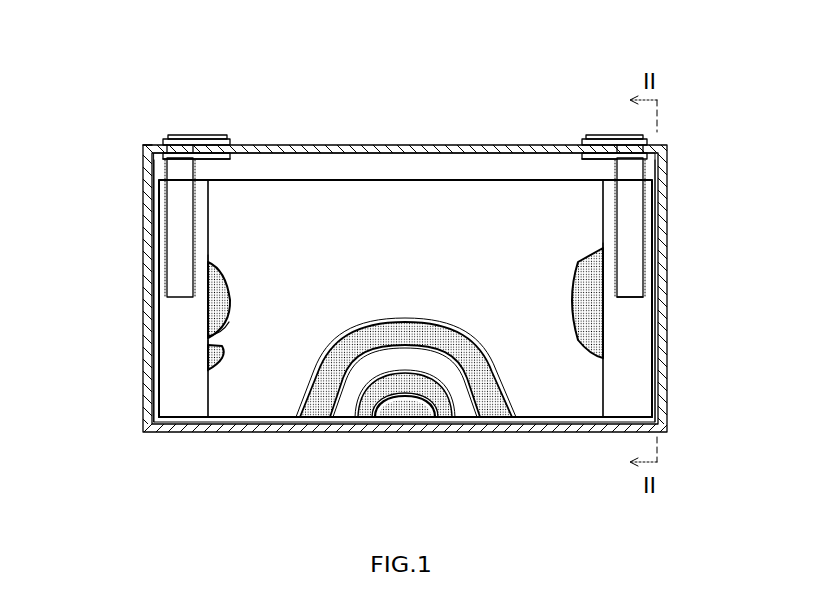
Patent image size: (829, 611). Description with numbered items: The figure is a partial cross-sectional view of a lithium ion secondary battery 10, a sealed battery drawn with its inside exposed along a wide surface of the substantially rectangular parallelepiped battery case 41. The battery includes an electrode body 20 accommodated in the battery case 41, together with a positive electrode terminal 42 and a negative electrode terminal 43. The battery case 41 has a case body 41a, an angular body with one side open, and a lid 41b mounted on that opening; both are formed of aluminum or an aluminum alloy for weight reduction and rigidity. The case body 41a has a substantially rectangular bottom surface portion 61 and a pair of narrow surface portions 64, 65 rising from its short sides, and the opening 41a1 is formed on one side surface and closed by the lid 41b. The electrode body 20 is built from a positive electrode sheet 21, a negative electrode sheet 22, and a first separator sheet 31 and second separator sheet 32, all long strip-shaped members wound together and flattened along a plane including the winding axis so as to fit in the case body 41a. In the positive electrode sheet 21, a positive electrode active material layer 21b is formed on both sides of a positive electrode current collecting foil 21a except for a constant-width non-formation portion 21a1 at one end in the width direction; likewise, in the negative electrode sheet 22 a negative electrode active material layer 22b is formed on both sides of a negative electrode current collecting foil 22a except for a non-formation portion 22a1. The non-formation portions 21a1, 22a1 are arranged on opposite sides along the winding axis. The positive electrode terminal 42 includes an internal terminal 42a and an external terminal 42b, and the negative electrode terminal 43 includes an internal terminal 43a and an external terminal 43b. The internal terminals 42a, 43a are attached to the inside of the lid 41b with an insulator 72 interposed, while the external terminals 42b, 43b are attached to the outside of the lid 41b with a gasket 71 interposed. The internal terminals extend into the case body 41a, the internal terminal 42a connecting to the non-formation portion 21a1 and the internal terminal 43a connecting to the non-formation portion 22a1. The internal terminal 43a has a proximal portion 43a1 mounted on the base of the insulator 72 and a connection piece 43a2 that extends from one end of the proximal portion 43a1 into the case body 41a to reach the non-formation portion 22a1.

The lithium ion secondary battery 10 is at (472, 82).
The electrode body 20 is at (323, 176).
The positive electrode sheet 21 is at (369, 409).
The positive electrode current collecting foil 21a is at (180, 354).
The non-formation portion 21a1 is at (182, 404).
The positive electrode active material layer 21b is at (232, 295).
The negative electrode sheet 22 is at (315, 408).
The negative electrode current collecting foil 22a is at (633, 345).
The non-formation portion 22a1 is at (640, 400).
The negative electrode active material layer 22b is at (227, 351).
The first separator sheet 31 is at (229, 328).
The second separator sheet 32 is at (405, 410).
The battery case 41 is at (692, 217).
The case body 41a is at (146, 216).
The opening 41a1 is at (150, 143).
The lid 41b is at (400, 143).
The positive electrode terminal 42 is at (182, 130).
The internal terminal 42a is at (163, 163).
The external terminal 42b is at (224, 135).
The negative electrode terminal 43 is at (618, 128).
The internal terminal 43a is at (647, 163).
The proximal portion 43a1 is at (598, 158).
The connection piece 43a2 is at (635, 258).
The external terminal 43b is at (590, 135).
The bottom surface portion 61 is at (505, 432).
The narrow surface portion 64 is at (146, 291).
The narrow surface portion 65 is at (660, 289).
The gasket 71 is at (163, 139).
The insulator 72 is at (230, 157).